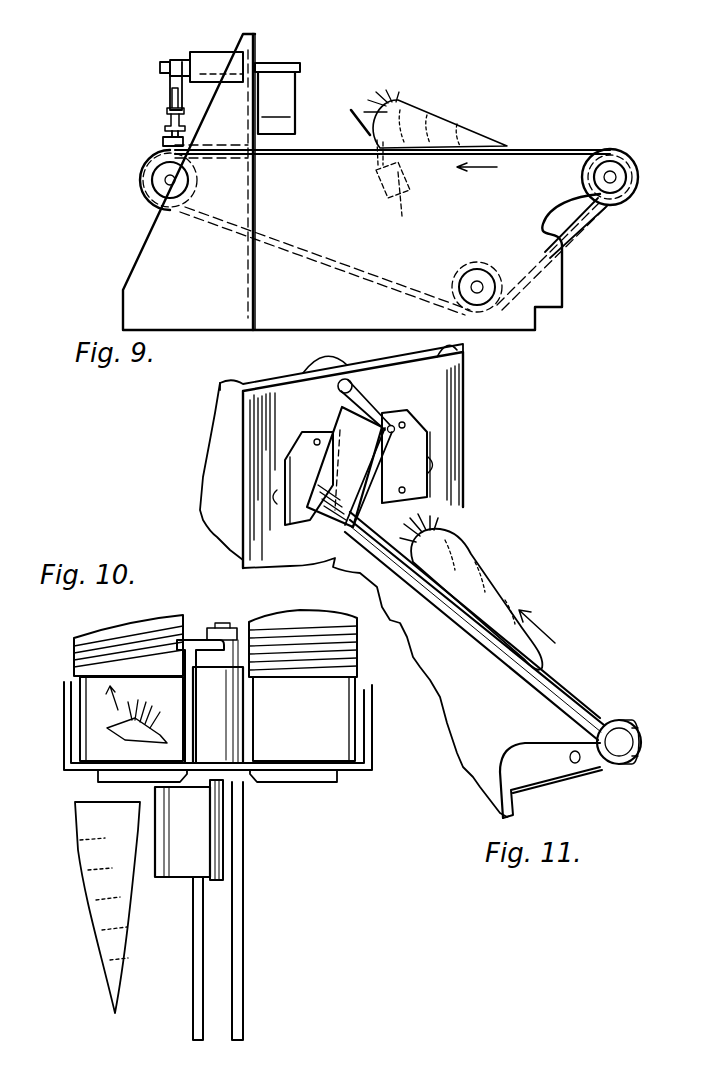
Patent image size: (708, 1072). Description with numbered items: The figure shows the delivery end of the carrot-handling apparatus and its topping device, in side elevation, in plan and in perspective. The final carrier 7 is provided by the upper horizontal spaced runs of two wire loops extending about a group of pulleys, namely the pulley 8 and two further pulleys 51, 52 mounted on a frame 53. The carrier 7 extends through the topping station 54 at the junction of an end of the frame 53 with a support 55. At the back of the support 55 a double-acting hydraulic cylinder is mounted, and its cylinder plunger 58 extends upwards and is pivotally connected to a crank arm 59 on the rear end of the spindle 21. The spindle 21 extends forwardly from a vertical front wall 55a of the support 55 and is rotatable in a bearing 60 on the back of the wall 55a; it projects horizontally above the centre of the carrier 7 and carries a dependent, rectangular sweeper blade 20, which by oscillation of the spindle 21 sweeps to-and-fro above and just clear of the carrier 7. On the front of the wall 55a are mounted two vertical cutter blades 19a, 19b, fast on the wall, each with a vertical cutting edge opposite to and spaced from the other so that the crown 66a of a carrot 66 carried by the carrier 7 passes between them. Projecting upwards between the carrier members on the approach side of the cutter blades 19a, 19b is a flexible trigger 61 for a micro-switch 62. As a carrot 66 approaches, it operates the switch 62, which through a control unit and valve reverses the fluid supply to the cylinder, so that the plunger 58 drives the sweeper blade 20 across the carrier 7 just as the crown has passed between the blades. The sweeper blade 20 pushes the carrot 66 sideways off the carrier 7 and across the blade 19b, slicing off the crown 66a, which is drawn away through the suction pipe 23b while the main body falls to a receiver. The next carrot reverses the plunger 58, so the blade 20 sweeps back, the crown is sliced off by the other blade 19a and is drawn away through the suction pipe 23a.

In FIG. 9, the final carrier 7 is at (566, 152).
In FIG. 10, the final carrier 7 is at (240, 984).
In FIG. 11, the final carrier 7 is at (559, 692).
In FIG. 9, the pulley 8 is at (614, 160).
In FIG. 11, the pulley 8 is at (619, 772).
In FIG. 10, the cutter blade 19a is at (325, 783).
In FIG. 11, the cutter blade 19a is at (410, 437).
In FIG. 10, the cutter blade 19b is at (115, 772).
In FIG. 11, the cutter blade 19b is at (287, 465).
In FIG. 9, the sweeper blade 20 is at (283, 100).
In FIG. 10, the sweeper blade 20 is at (188, 860).
In FIG. 11, the sweeper blade 20 is at (342, 413).
In FIG. 9, the spindle 21 is at (290, 63).
In FIG. 10, the spindle 21 is at (218, 822).
In FIG. 11, the spindle 21 is at (372, 410).
In FIG. 10, the suction pipe 23a is at (300, 634).
In FIG. 10, the suction pipe 23b is at (110, 640).
In FIG. 9, the pulley 51 is at (491, 262).
In FIG. 9, the pulley 52 is at (141, 191).
In FIG. 9, the frame 53 is at (548, 243).
In FIG. 11, the frame 53 is at (540, 755).
In FIG. 9, the topping station 54 is at (268, 63).
In FIG. 9, the support 55 is at (140, 246).
In FIG. 10, the support 55 is at (372, 745).
In FIG. 11, the support 55 is at (208, 503).
In FIG. 11, the vertical front wall 55a is at (247, 434).
In FIG. 9, the cylinder plunger 58 is at (163, 137).
In FIG. 9, the crank arm 59 is at (174, 75).
In FIG. 10, the crank arm 59 is at (194, 638).
In FIG. 9, the bearing 60 is at (202, 58).
In FIG. 10, the bearing 60 is at (218, 721).
In FIG. 9, the flexible trigger 61 is at (358, 142).
In FIG. 9, the micro-switch 62 is at (398, 192).
In FIG. 9, the carrot 66 is at (455, 130).
In FIG. 10, the carrot 66 is at (105, 914).
In FIG. 11, the carrot 66 is at (497, 607).
In FIG. 10, the crown 66a is at (120, 730).
In FIG. 11, the crown 66a is at (437, 538).